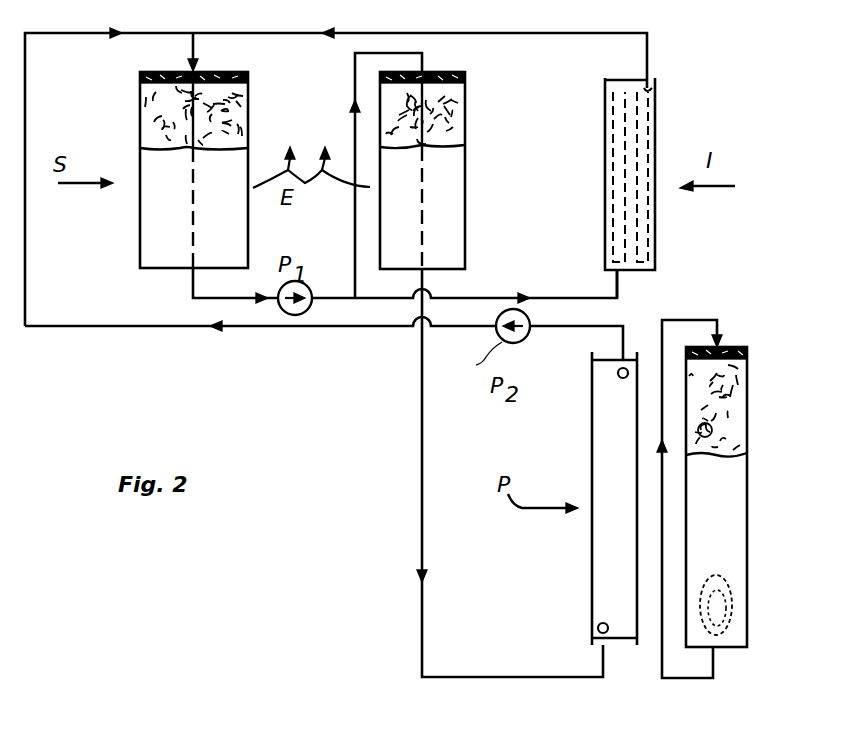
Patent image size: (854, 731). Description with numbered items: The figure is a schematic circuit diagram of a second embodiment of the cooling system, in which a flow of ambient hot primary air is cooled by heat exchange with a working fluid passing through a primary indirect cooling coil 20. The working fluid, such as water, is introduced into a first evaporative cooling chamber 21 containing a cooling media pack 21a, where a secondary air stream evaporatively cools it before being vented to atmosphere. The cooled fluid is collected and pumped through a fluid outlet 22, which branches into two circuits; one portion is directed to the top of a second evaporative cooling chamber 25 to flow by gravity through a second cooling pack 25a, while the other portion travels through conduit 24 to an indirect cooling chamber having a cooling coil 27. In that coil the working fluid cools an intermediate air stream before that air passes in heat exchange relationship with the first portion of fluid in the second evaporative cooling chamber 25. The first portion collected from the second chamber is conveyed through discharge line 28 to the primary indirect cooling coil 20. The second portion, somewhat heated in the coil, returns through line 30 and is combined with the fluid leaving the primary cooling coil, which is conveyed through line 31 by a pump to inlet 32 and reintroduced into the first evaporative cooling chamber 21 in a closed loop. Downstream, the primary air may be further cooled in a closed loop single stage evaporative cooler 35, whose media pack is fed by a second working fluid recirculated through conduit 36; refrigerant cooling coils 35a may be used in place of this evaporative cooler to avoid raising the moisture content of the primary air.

The primary indirect cooling coil 20 is at (593, 560).
The first evaporative cooling chamber 21 is at (188, 170).
The cooling media pack 21a is at (235, 106).
The fluid outlet 22 is at (193, 292).
The conduit 24 is at (556, 297).
The second evaporative cooling chamber 25 is at (460, 169).
The second cooling pack 25a is at (460, 105).
The cooling coil 27 is at (604, 170).
The discharge line 28 is at (418, 550).
The line 30 is at (309, 32).
The line 31 is at (305, 345).
The inlet 32 is at (200, 45).
The closed loop single stage evaporative cooler 35 is at (743, 497).
The refrigerant cooling coils 35a is at (732, 578).
The conduit 36 is at (672, 680).